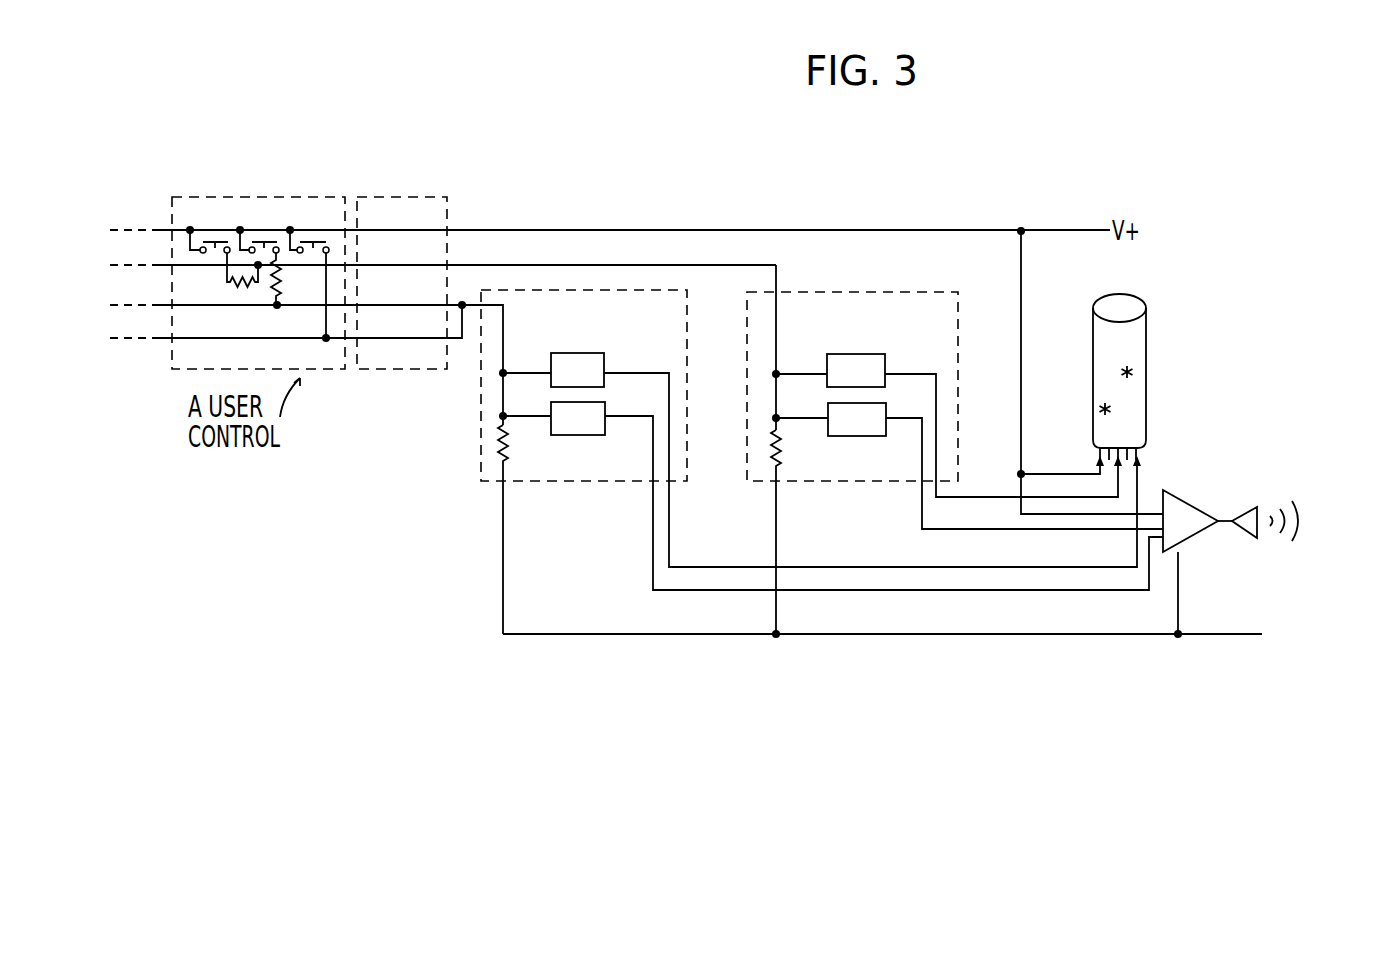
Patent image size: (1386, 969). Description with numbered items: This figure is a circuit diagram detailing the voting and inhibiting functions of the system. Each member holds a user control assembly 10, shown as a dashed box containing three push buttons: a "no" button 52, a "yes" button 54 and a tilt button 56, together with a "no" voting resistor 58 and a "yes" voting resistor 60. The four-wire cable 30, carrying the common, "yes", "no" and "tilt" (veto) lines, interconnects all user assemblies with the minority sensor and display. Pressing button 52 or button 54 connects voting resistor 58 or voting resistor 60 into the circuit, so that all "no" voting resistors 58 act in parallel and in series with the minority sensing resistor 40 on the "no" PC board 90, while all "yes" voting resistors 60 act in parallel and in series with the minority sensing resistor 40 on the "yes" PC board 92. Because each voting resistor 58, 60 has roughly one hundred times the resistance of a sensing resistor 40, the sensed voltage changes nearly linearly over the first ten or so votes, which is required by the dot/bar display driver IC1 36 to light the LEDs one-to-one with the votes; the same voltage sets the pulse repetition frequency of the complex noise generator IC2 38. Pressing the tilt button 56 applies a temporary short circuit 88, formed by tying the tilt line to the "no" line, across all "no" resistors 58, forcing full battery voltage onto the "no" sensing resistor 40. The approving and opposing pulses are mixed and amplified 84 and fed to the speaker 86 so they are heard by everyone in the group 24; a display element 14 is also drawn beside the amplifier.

The user control assembly 10 is at (280, 197).
The cable 30 is at (412, 197).
The "no" button 52 is at (262, 242).
The "yes" button 54 is at (210, 242).
The tilt button 56 is at (313, 242).
The "no" voting resistor 58 is at (272, 298).
The "yes" voting resistor 60 is at (227, 285).
The short circuit 88 is at (466, 308).
The dot/bar display driver IC1 36 is at (600, 353).
The complex noise generator IC2 38 is at (605, 410).
The minority sensing resistor 40 is at (508, 455).
The "no" PC board 90 is at (622, 483).
The "yes" PC board 92 is at (812, 483).
The display tube 14 is at (1146, 345).
The mixer-amplifier 84 is at (1190, 503).
The speaker 86 is at (1252, 536).
The group 24 is at (1300, 527).